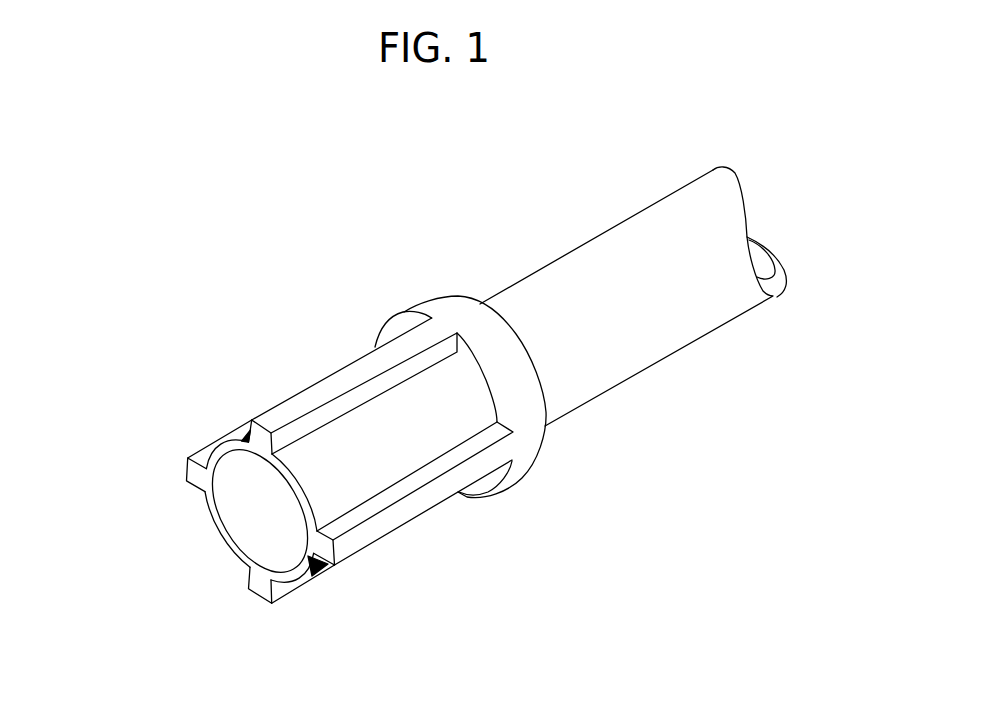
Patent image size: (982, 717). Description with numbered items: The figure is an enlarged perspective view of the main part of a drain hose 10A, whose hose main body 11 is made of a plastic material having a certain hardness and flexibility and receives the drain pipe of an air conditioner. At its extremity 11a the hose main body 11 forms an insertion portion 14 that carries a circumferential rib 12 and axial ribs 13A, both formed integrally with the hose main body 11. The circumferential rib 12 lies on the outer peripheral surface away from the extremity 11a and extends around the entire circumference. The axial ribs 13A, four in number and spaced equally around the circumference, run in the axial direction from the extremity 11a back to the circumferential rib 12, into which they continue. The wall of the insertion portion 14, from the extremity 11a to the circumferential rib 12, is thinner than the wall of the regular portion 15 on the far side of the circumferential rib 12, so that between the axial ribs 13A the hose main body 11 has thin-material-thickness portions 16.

The drain hose 10A is at (298, 459).
The hose main body 11 is at (554, 295).
The extremity 11a is at (224, 546).
The circumferential rib 12 is at (434, 352).
The axial ribs 13A is at (318, 386).
The insertion portion 14 is at (406, 308).
The regular portion 15 is at (637, 228).
The thin-material-thickness portions 16 is at (222, 444).